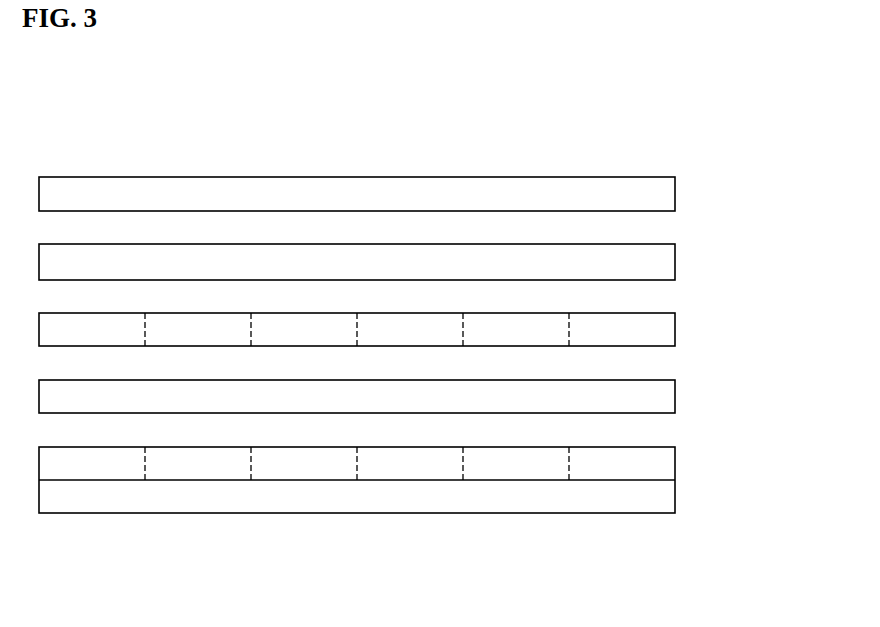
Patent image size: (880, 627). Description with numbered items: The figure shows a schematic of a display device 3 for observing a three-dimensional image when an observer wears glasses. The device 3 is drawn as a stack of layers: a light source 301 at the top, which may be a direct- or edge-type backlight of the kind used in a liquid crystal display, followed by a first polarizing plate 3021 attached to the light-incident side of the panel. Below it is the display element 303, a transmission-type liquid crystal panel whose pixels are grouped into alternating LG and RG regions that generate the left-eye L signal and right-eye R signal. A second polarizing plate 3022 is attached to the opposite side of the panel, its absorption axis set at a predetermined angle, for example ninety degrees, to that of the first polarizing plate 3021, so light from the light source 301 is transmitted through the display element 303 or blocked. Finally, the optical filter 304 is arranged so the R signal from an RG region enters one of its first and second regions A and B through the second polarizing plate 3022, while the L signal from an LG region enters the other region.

The device 3 is at (82, 160).
The light source 301 is at (625, 190).
The first polarizing plate 3021 is at (665, 264).
The display element 303 is at (675, 329).
The second polarizing plate 3022 is at (675, 404).
The optical filter 304 is at (538, 527).